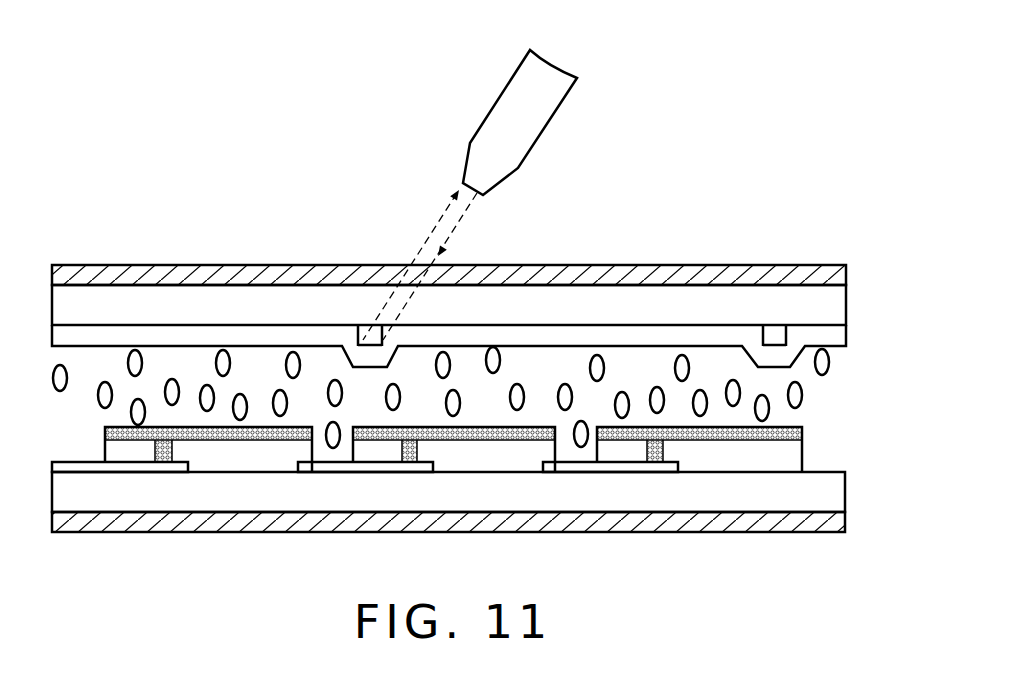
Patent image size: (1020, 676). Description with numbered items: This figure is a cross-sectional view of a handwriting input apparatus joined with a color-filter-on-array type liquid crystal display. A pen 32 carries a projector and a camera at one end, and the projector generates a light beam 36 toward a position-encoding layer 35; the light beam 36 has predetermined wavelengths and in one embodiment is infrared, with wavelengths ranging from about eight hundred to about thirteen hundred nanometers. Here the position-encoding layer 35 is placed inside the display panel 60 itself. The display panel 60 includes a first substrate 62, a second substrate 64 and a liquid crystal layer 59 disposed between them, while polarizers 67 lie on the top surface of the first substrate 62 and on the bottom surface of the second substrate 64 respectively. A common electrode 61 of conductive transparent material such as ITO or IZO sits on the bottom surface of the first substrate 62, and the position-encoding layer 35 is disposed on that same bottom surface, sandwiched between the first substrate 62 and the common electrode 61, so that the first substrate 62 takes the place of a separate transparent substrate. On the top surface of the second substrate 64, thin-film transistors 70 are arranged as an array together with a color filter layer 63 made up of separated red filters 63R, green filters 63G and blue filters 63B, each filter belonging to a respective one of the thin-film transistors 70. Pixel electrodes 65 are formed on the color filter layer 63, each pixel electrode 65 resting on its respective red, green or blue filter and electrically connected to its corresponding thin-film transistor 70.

The pen 32 is at (520, 122).
The position-encoding layer 35 is at (363, 338).
The light beam 36 is at (463, 217).
The liquid crystal layer 59 is at (825, 390).
The display panel 60 is at (114, 250).
The common electrode 61 is at (847, 336).
The first substrate 62 is at (847, 309).
The color filter layer 63 is at (480, 449).
The red filters 63R is at (208, 449).
The green filters 63G is at (454, 449).
The blue filters 63B is at (699, 449).
The second substrate 64 is at (846, 497).
The pixel electrode 65 is at (804, 432).
The polarizers 67 is at (847, 279).
The thin-film transistors 70 is at (113, 468).